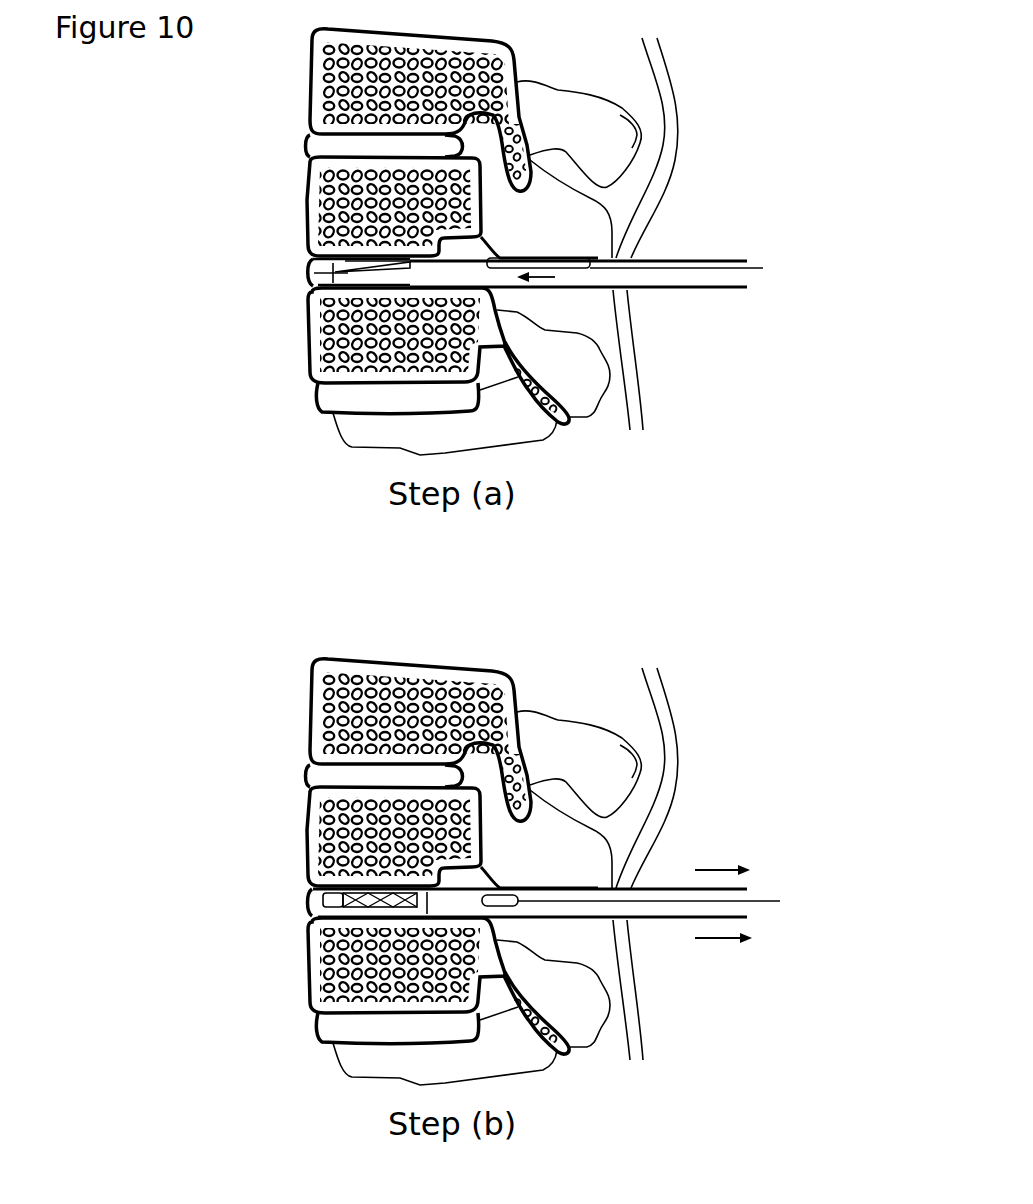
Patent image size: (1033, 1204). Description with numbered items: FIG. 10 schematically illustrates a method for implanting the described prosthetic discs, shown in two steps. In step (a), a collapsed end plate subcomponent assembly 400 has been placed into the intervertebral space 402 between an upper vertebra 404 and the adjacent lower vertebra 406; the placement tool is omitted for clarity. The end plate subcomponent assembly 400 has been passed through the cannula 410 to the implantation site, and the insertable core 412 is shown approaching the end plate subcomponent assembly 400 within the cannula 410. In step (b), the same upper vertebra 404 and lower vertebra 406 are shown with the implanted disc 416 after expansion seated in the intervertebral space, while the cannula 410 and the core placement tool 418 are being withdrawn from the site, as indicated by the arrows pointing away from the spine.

The end plate subcomponent assembly 400 is at (313, 261).
The intervertebral space 402 is at (313, 286).
The upper vertebra 404 is at (307, 218).
The lower vertebra 406 is at (310, 333).
The cannula 410 is at (672, 258).
The insertable core 412 is at (585, 270).
The implanted disc 416 is at (311, 898).
The core placement tool 418 is at (512, 906).